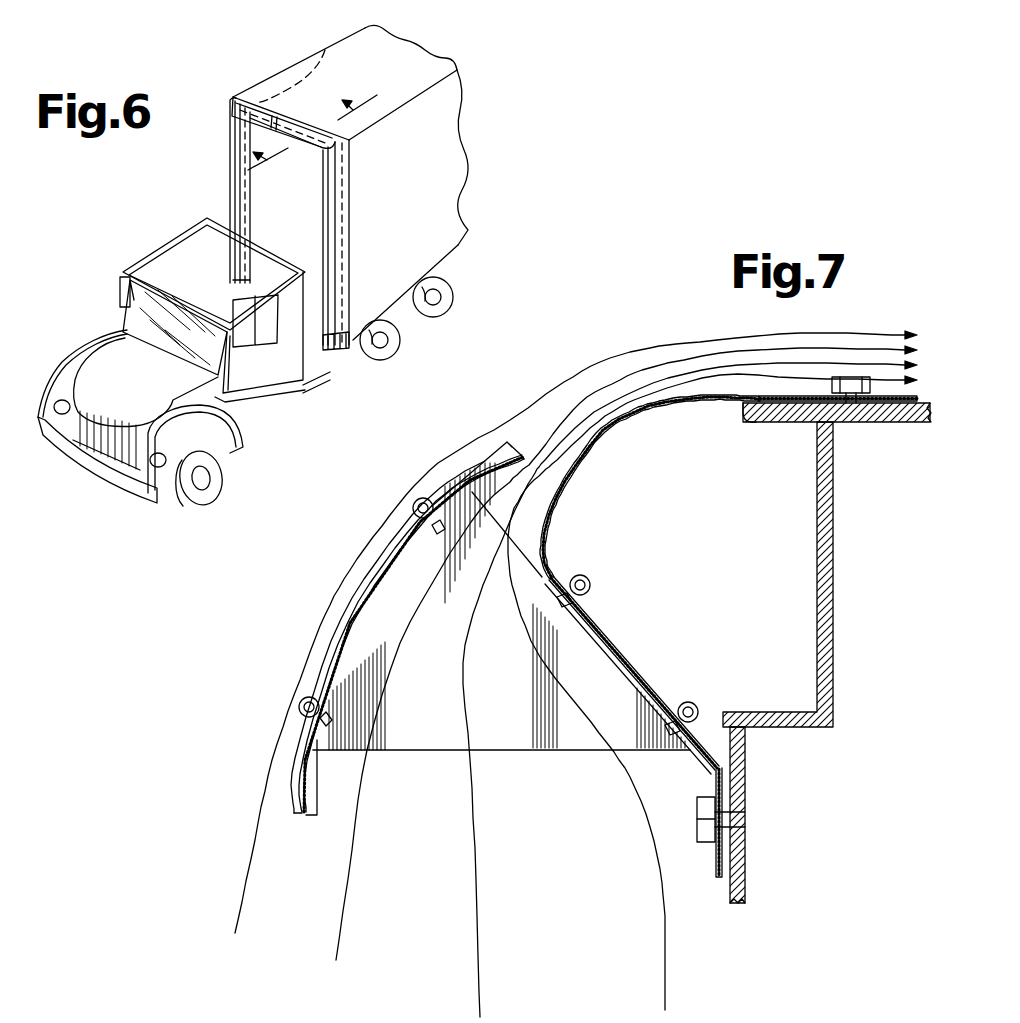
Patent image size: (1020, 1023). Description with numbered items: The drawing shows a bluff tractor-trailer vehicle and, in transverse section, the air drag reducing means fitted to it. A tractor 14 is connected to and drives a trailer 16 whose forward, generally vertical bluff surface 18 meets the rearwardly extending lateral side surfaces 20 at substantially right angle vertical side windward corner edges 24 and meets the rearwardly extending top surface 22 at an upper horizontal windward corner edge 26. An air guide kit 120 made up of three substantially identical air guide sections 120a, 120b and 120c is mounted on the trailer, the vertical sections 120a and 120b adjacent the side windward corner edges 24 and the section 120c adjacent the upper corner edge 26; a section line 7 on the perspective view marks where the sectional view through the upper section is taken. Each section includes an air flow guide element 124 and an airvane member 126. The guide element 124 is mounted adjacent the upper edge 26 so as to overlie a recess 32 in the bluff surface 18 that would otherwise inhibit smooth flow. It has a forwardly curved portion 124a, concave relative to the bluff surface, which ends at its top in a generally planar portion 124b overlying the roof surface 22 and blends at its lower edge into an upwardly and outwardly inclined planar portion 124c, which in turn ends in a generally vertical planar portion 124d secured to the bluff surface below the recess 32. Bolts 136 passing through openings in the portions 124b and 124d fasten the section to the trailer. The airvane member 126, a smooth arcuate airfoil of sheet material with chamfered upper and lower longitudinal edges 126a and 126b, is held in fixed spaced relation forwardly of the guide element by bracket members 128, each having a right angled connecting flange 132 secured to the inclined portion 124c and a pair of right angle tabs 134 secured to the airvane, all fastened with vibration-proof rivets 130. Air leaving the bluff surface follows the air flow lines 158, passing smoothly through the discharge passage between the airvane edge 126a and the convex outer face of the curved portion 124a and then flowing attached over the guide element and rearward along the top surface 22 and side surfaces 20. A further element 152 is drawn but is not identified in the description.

In FIG. 6, the section line 7— 7 is at (321, 137).
In FIG. 6, the tractor 14 is at (262, 433).
In FIG. 6, the trailer 16 is at (462, 130).
In FIG. 6, the bluff surface 18 is at (268, 195).
In FIG. 7, the bluff surface 18 is at (724, 862).
In FIG. 6, the lateral side surface 20 is at (455, 213).
In FIG. 6, the top surface 22 is at (420, 50).
In FIG. 7, the top surface 22 is at (925, 400).
In FIG. 6, the side windward corner edges 24 is at (243, 142).
In FIG. 6, the upper horizontal windward corner edge 26 is at (325, 50).
In FIG. 7, the upper horizontal windward corner edge 26 is at (740, 414).
In FIG. 7, the recess 32 is at (814, 572).
In FIG. 6, the air guide kit 120 is at (295, 183).
In FIG. 6, the air guide section 120a is at (250, 160).
In FIG. 6, the air guide section 120b is at (352, 200).
In FIG. 6, the air guide section 120c is at (252, 100).
In FIG. 7, the air flow guide element 124 is at (728, 589).
In FIG. 7, the forwardly curved portion 124a is at (562, 495).
In FIG. 7, the upper planar portion 124b is at (795, 395).
In FIG. 7, the inclined planar portion 124c is at (645, 663).
In FIG. 7, the vertical planar portion 124d is at (712, 782).
In FIG. 7, the airvane member 126 is at (373, 602).
In FIG. 7, the upper longitudinal edge 126a is at (519, 450).
In FIG. 7, the lower longitudinal edge 126b is at (306, 815).
In FIG. 7, the bracket member 128 is at (540, 746).
In FIG. 7, the vibration-proof rivets 130 is at (590, 578).
In FIG. 7, the connecting flange 132 is at (606, 647).
In FIG. 7, the right angle tabs 134 is at (435, 545).
In FIG. 7, the bolts 136 is at (850, 395).
In FIG. 7, the outer shield 152 is at (377, 560).
In FIG. 7, the air flow lines 158 is at (243, 910).